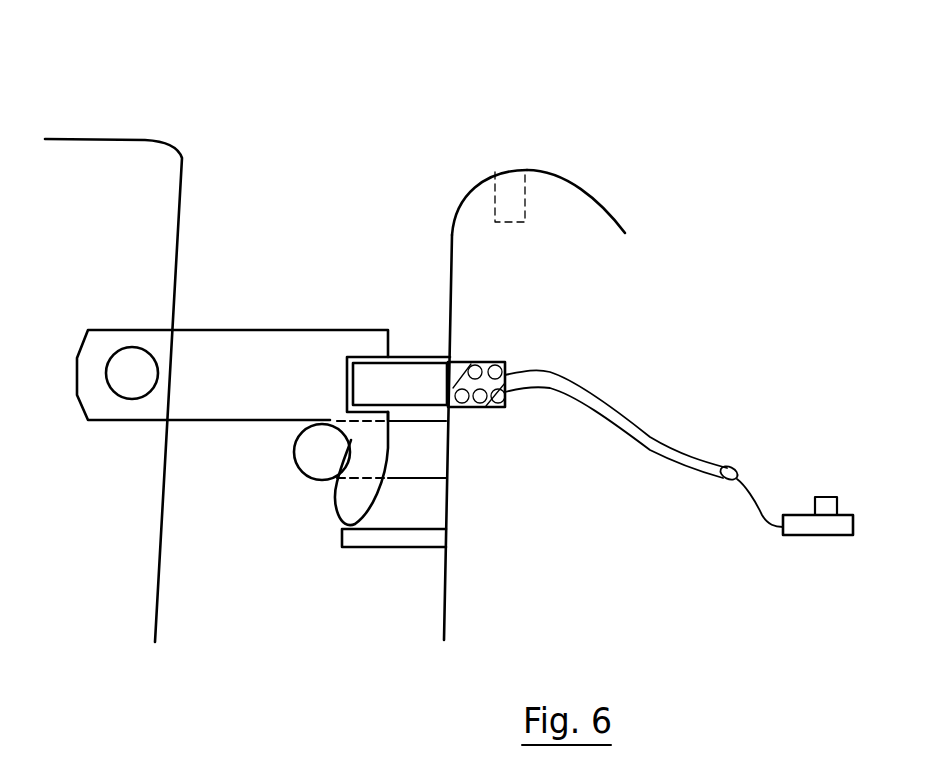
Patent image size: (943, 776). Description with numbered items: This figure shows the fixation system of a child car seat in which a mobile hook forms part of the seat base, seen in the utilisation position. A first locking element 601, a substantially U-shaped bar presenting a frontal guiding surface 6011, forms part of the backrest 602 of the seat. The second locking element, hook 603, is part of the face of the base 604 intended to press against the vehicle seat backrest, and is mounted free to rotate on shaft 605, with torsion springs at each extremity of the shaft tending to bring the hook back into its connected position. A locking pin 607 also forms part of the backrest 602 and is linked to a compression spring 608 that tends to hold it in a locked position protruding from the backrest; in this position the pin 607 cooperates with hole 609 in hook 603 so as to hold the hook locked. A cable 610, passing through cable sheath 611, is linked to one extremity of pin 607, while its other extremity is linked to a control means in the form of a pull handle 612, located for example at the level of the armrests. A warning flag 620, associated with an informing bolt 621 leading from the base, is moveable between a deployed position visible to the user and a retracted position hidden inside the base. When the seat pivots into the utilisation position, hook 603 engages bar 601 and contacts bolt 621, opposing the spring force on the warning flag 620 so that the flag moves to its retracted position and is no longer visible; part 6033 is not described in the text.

The base 604 is at (102, 162).
The hook 603 is at (210, 348).
The shaft 605 is at (132, 382).
The first locking element 601 is at (318, 455).
The frontal guiding surface 6011 is at (292, 455).
The hole 609 is at (370, 355).
The locking pin 607 is at (407, 380).
The compression spring 608 is at (500, 363).
The warning flag 620 is at (510, 203).
The backrest 602 is at (567, 225).
The hook 6033 is at (380, 495).
The informing bolt 621 is at (382, 538).
The cable sheath 611 is at (628, 418).
The cable 610 is at (753, 487).
The pull handle 612 is at (825, 525).